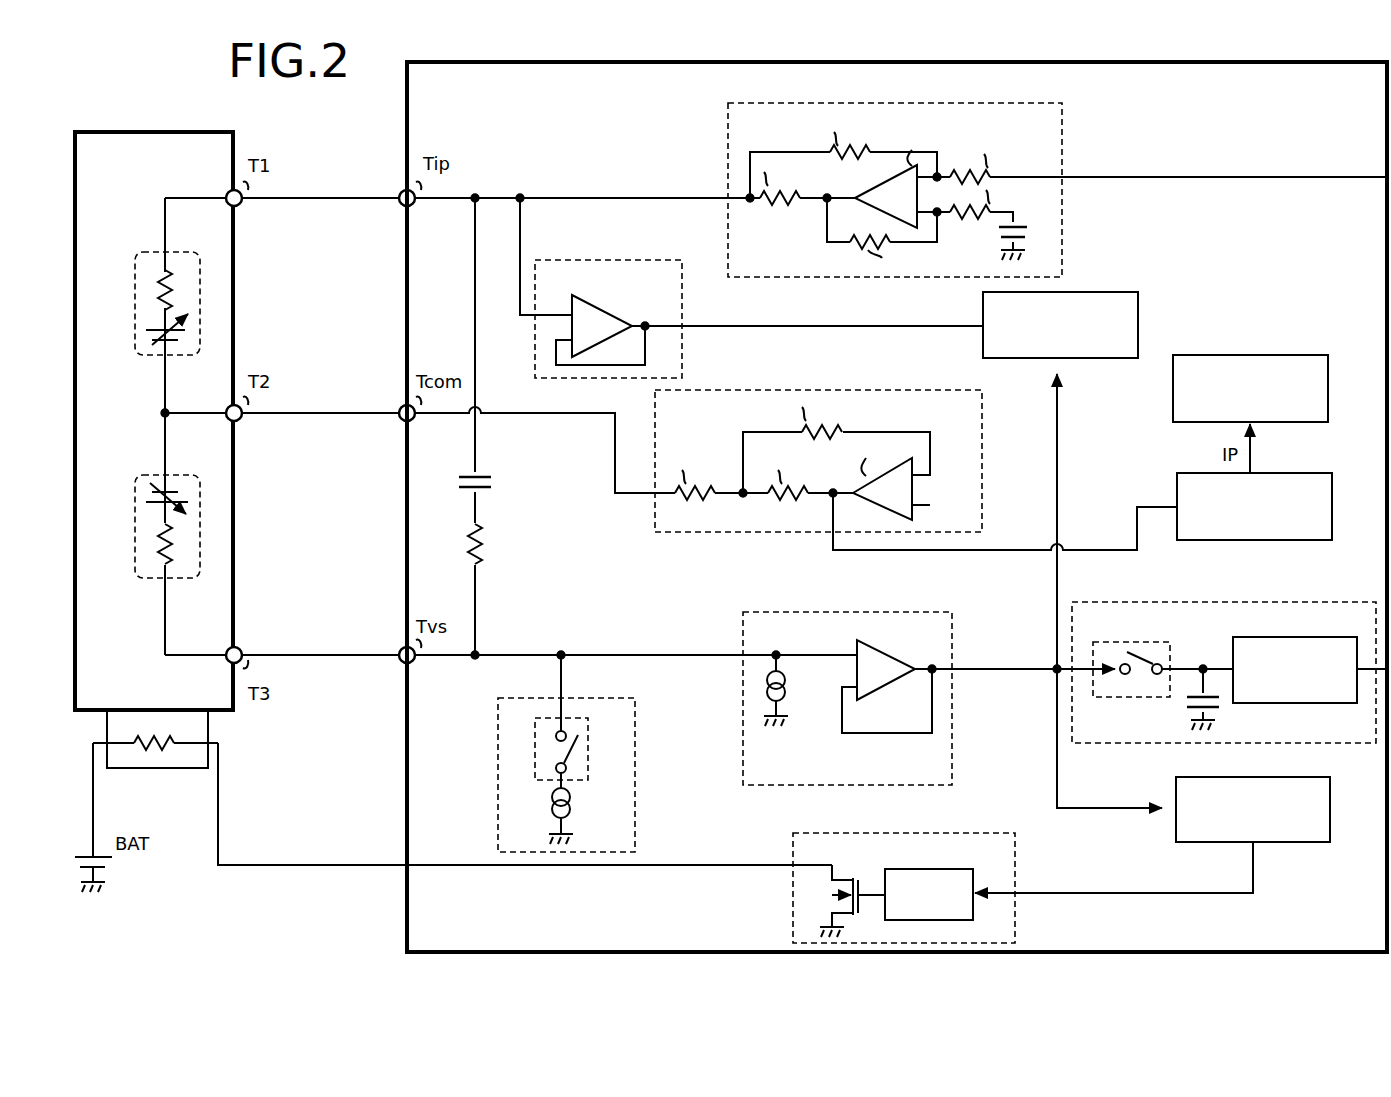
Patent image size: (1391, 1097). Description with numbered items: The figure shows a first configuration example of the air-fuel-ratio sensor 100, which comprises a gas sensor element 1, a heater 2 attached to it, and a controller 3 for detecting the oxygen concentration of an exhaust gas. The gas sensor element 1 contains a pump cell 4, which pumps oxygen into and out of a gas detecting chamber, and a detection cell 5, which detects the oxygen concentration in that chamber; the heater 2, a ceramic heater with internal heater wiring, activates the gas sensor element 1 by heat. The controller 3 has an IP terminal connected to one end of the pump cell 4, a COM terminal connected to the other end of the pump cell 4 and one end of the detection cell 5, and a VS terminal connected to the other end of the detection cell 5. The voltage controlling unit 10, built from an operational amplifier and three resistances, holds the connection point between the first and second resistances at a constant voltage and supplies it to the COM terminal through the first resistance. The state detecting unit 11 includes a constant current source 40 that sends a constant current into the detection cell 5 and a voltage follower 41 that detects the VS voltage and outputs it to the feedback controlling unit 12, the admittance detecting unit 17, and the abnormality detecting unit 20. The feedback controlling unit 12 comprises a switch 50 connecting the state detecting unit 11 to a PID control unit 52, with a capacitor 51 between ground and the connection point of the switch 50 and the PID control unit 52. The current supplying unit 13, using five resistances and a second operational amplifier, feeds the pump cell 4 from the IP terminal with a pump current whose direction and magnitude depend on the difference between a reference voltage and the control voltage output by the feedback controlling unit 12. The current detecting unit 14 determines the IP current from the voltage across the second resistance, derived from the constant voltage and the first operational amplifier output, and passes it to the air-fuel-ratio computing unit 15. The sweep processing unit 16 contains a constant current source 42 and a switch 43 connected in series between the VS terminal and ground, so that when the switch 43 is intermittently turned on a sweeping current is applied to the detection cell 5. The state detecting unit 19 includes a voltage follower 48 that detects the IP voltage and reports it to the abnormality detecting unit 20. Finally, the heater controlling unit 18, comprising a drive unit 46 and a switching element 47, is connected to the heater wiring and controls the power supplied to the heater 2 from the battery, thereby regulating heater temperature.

The air-fuel-ratio sensor 100 is at (176, 84).
The gas sensor element 1 is at (205, 134).
The heater 2 is at (166, 770).
The controller 3 is at (657, 64).
The pump cell 4 is at (180, 240).
The detection cell 5 is at (191, 464).
The voltage controlling unit 10 is at (943, 398).
The state detecting unit 11 is at (795, 683).
The feedback controlling unit 12 is at (1224, 661).
The current supplying unit 13 is at (1005, 109).
The current detecting unit 14 is at (1300, 477).
The air-fuel-ratio computing unit 15 is at (1298, 359).
The sweep processing unit 16 is at (567, 753).
The admittance detecting unit 17 is at (1313, 780).
The heater controlling unit 18 is at (904, 873).
The state detecting unit 19 is at (751, 288).
The abnormality detecting unit 20 is at (1106, 296).
The constant current source 40 is at (794, 696).
The voltage follower 41 is at (891, 656).
The constant current source 42 is at (577, 812).
The switch 43 is at (588, 761).
The drive unit 46 is at (954, 878).
The switching element 47 is at (834, 886).
The voltage follower 48 is at (601, 314).
The switch 50 is at (1136, 645).
The capacitor 51 is at (1215, 720).
The PID control unit 52 is at (1301, 642).